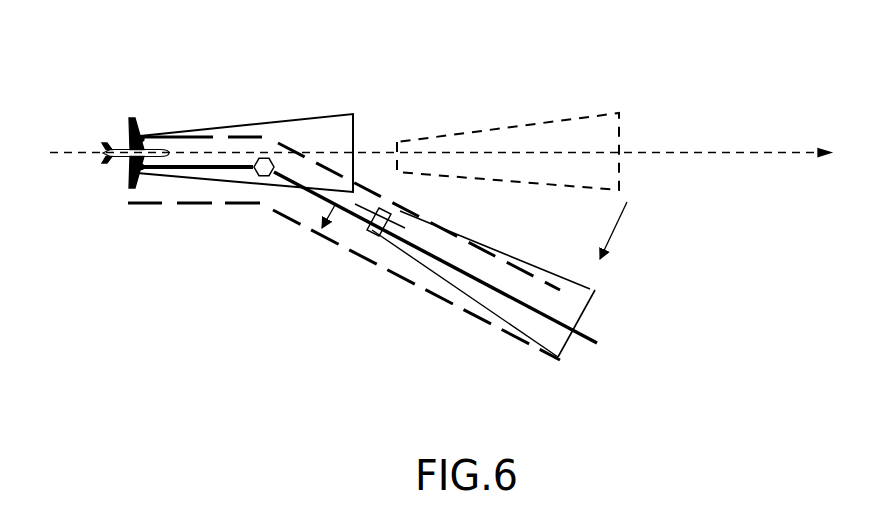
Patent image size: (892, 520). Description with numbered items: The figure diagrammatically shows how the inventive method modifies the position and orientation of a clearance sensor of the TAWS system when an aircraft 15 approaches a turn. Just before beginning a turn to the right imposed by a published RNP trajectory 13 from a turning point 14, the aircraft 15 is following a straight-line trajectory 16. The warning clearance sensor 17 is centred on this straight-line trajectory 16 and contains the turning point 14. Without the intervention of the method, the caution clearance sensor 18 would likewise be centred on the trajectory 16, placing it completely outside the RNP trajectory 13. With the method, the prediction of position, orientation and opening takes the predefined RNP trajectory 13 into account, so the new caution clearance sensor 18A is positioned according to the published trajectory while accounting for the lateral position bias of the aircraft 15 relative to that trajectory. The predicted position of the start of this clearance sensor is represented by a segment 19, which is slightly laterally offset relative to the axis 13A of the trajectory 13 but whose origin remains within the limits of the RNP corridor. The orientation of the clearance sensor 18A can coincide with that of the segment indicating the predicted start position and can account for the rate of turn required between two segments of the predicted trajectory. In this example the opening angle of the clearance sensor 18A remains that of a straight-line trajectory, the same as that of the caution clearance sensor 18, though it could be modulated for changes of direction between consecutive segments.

The published RNP trajectory 13 is at (360, 304).
The axis of the trajectory 13A is at (600, 343).
The turning point 14 is at (267, 148).
The aircraft 15 is at (103, 162).
The straight-line trajectory 16 is at (744, 151).
The warning clearance sensor 17 is at (337, 130).
The caution clearance sensor 18 is at (550, 135).
The new caution clearance sensor 18A is at (558, 307).
The segment 19 is at (398, 212).